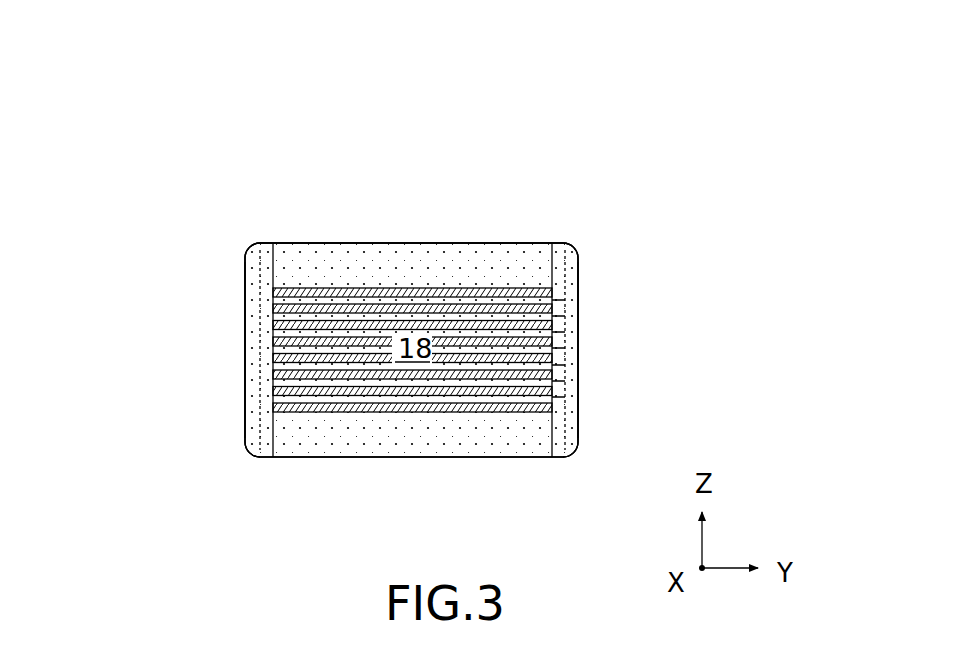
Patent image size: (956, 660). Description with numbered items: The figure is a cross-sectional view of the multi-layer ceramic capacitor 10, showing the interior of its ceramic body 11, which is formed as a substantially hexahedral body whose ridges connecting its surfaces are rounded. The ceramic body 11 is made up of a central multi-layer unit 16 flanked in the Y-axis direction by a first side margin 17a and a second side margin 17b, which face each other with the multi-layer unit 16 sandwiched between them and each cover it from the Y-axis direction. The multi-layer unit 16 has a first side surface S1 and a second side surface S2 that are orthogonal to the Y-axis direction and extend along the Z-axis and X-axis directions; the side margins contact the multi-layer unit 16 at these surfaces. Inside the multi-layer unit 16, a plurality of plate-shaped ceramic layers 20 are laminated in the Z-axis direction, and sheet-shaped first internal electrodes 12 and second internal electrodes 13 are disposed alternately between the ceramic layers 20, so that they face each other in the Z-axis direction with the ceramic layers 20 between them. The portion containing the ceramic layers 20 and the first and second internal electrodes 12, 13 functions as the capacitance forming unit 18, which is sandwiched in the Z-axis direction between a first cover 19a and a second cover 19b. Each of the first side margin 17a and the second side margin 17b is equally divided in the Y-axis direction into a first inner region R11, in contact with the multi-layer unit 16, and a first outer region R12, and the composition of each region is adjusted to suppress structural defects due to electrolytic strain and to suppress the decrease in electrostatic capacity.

The multi-layer ceramic capacitor 10 is at (234, 172).
The ceramic body 11 is at (558, 192).
The first internal electrodes 12 is at (314, 392).
The second internal electrodes 13 is at (443, 407).
The multi-layer unit 16 is at (417, 229).
The first side margin 17a is at (135, 207).
The second side margin 17b is at (693, 215).
The first inner region R11 is at (250, 250).
The first outer region R12 is at (248, 263).
The capacitance forming unit 18 is at (430, 362).
The first cover 19a is at (445, 282).
The second cover 19b is at (445, 447).
The ceramic layers 20 is at (552, 347).
The first side surface S1 is at (248, 424).
The second side surface S2 is at (576, 424).